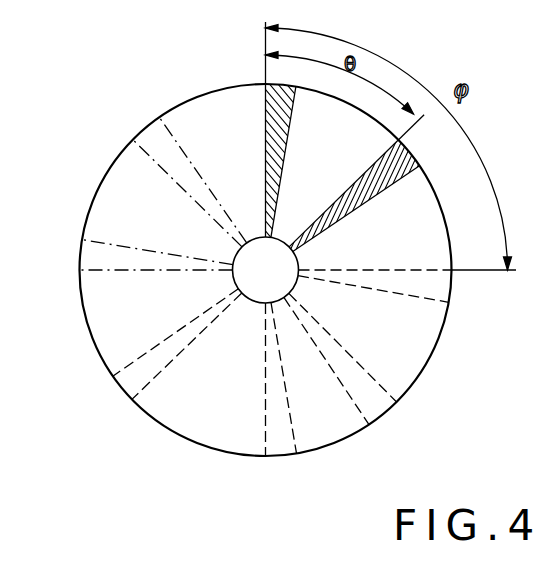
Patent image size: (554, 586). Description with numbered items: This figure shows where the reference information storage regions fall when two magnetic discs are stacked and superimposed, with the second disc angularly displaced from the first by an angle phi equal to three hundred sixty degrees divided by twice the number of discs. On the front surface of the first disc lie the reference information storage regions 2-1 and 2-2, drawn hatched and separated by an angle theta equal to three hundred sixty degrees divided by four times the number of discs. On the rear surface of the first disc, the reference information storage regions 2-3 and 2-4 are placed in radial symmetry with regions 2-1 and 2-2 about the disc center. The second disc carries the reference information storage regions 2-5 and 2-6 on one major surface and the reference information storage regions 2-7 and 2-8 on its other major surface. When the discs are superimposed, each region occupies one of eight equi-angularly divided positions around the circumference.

The reference information storage region 2-1 is at (282, 88).
The reference information storage region 2-2 is at (406, 149).
The reference information storage region 2-3 is at (254, 447).
The reference information storage region 2-4 is at (129, 382).
The reference information storage region 2-5 is at (445, 290).
The reference information storage region 2-6 is at (380, 404).
The reference information storage region 2-7 is at (82, 258).
The reference information storage region 2-8 is at (152, 131).